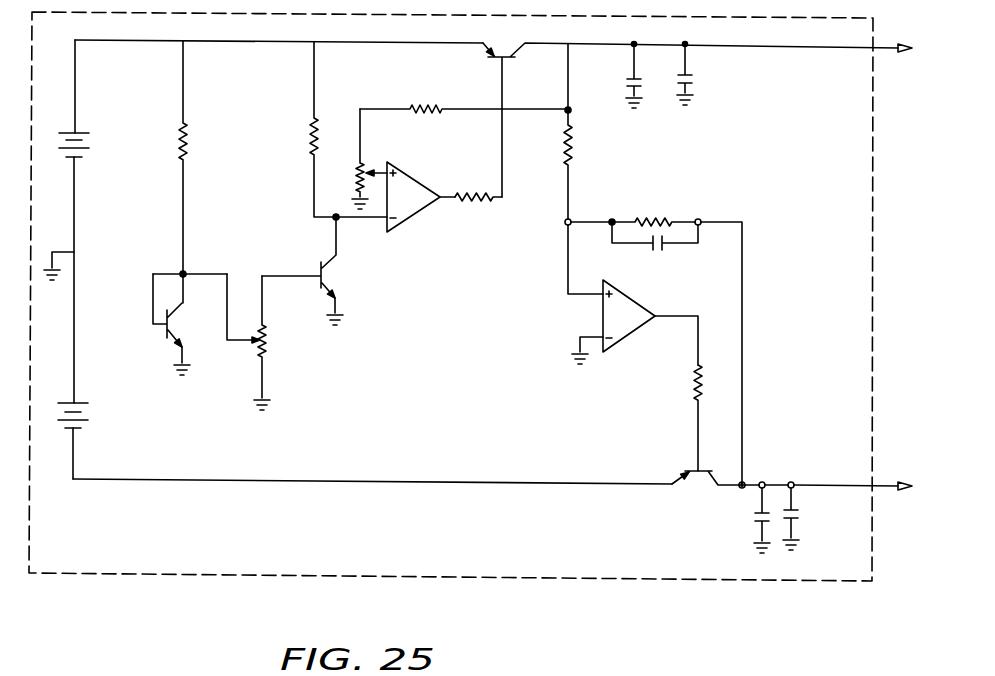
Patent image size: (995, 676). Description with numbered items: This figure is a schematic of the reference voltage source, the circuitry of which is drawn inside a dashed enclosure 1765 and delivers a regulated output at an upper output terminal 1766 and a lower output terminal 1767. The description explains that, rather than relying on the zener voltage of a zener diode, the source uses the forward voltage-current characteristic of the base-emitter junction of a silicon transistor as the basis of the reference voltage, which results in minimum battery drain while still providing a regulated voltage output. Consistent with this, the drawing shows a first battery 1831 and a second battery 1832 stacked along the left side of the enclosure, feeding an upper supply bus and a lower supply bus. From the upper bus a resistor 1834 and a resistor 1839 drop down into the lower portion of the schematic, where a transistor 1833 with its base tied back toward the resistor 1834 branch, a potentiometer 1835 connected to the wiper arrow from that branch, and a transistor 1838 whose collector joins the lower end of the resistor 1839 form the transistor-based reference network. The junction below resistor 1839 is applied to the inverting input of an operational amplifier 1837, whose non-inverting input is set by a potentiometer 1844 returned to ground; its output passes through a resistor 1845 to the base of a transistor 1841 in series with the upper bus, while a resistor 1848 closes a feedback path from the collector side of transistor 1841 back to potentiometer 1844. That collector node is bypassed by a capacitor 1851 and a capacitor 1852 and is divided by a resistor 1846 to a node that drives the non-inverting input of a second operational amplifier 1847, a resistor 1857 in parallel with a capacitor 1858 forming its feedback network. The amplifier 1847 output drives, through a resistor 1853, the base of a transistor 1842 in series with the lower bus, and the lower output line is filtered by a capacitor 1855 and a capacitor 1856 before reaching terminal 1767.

The dashed enclosure of circuit 1765 is at (803, 583).
The output terminal 1766 is at (890, 52).
The output terminal 1767 is at (884, 490).
The battery 1831 is at (88, 147).
The battery 1832 is at (88, 418).
The transistor 1833 is at (167, 340).
The resistor 1834 is at (188, 133).
The potentiometer 1835 is at (268, 343).
The operational amplifier 1837 is at (412, 172).
The transistor 1838 is at (318, 270).
The resistor 1839 is at (310, 125).
The transistor 1841 is at (508, 58).
The transistor 1842 is at (683, 470).
The potentiometer 1844 is at (362, 163).
The resistor 1845 is at (478, 200).
The resistor 1846 is at (573, 145).
The operational amplifier 1847 is at (628, 336).
The resistor 1848 is at (425, 108).
The capacitor 1851 is at (627, 89).
The capacitor 1852 is at (690, 82).
The resistor 1853 is at (692, 398).
The capacitor 1855 is at (758, 522).
The capacitor 1856 is at (795, 517).
The resistor 1857 is at (665, 218).
The capacitor 1858 is at (663, 245).